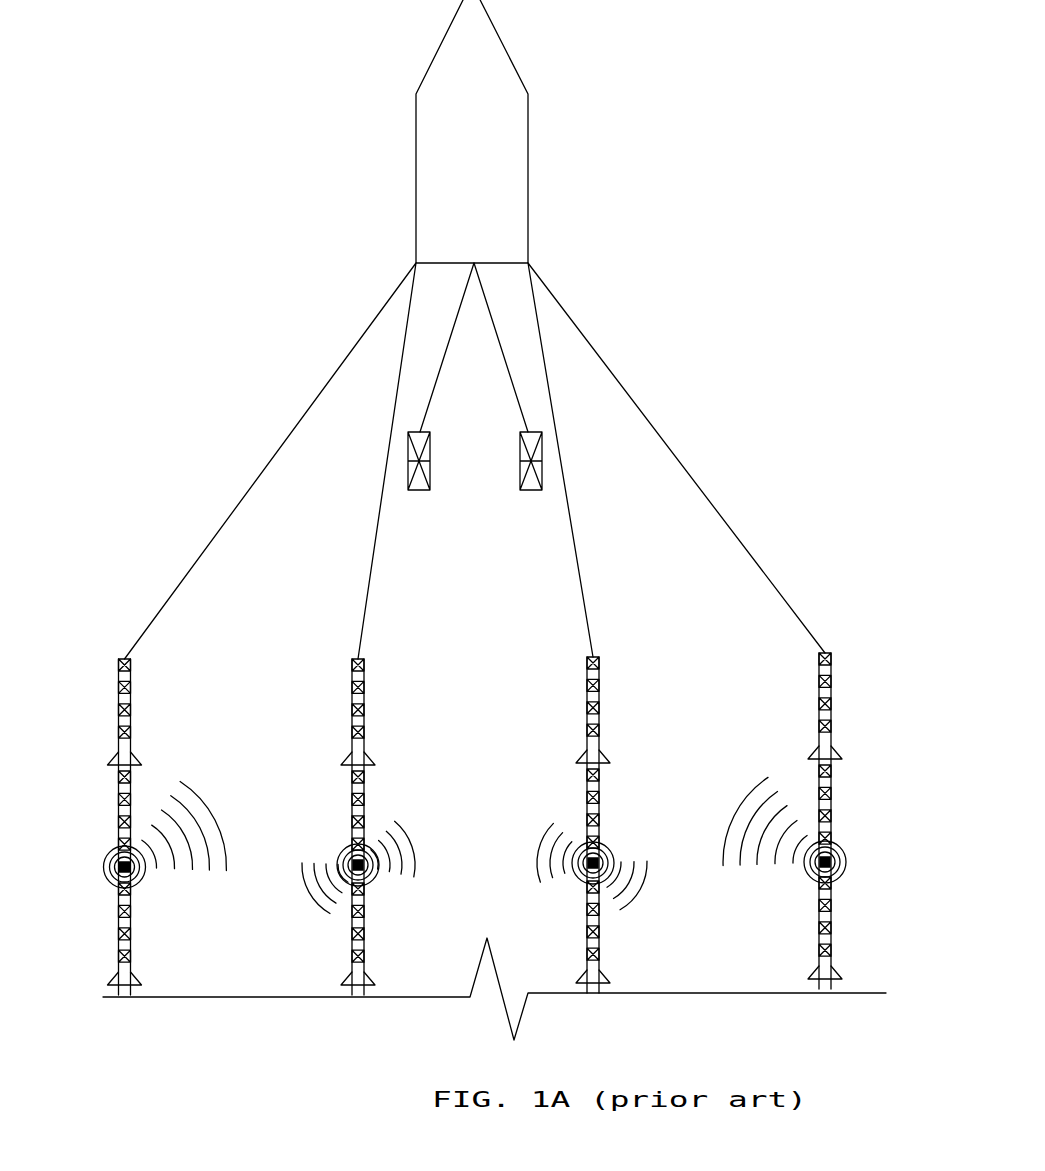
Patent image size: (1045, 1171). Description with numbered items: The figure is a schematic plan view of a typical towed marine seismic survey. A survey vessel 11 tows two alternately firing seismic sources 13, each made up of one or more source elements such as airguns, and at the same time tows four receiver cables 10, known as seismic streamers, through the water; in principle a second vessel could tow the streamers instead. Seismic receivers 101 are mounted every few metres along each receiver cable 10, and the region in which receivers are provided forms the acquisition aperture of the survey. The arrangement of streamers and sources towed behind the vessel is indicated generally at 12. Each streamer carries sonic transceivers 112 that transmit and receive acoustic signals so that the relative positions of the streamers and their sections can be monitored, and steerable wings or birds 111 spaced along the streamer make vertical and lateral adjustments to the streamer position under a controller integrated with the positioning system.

The receiver cable 10 is at (818, 668).
The survey vessel 11 is at (494, 181).
The cable system / tethers 12 is at (330, 336).
The seismic source 13 is at (430, 462).
The seismic receiver 101 is at (130, 690).
The steerable wing 111 is at (606, 978).
The sonic transceiver 112 is at (836, 850).